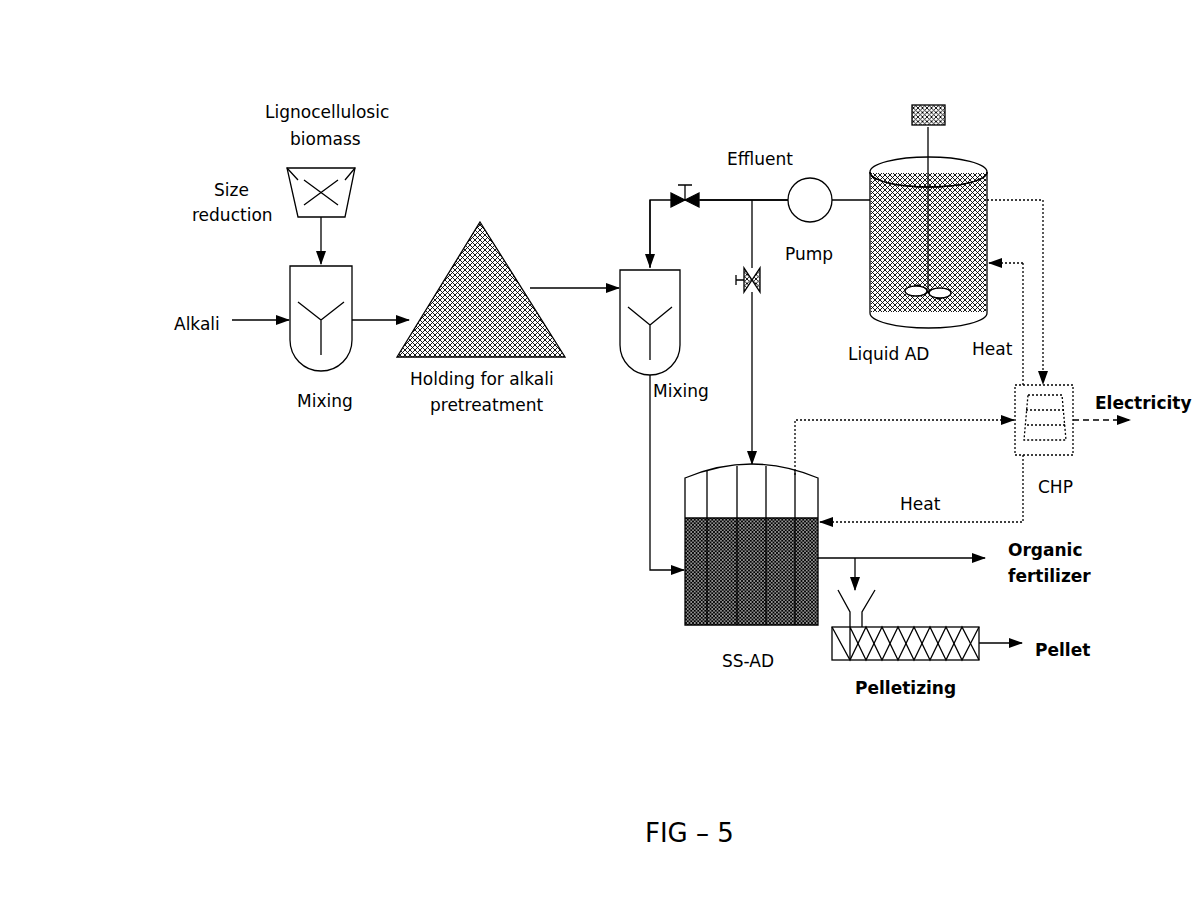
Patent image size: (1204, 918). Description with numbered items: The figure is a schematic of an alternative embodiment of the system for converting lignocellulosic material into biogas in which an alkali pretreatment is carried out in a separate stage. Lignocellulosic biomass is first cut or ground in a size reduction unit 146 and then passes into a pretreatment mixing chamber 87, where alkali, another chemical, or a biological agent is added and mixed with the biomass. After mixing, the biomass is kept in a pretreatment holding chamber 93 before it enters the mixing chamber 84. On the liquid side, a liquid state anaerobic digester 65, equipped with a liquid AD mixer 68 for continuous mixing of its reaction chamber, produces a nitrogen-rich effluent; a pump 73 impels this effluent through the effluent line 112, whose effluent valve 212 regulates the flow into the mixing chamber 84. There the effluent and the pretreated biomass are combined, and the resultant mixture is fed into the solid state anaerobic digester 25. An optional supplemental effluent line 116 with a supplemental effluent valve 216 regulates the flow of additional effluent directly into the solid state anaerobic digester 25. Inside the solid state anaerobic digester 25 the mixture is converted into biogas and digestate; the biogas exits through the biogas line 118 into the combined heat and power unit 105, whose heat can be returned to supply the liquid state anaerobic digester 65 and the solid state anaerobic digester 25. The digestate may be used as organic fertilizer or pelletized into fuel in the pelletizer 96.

The size reduction unit 146 is at (297, 204).
The pretreatment mixing chamber 87 is at (298, 371).
The pretreatment holding chamber 93 is at (470, 238).
The mixing chamber 84 is at (623, 359).
The effluent valve 212 is at (678, 195).
The effluent line 112 is at (729, 210).
The pump 73 is at (801, 178).
The supplemental effluent valve 216 is at (762, 290).
The supplemental effluent line 116 is at (746, 376).
The liquid state anaerobic digester 65 is at (868, 263).
The liquid AD mixer 68 is at (912, 113).
The combined heat and power unit 105 is at (1075, 388).
The biogas line 118 is at (908, 422).
The solid state anaerobic digester 25 is at (680, 606).
The pelletizer 96 is at (836, 660).